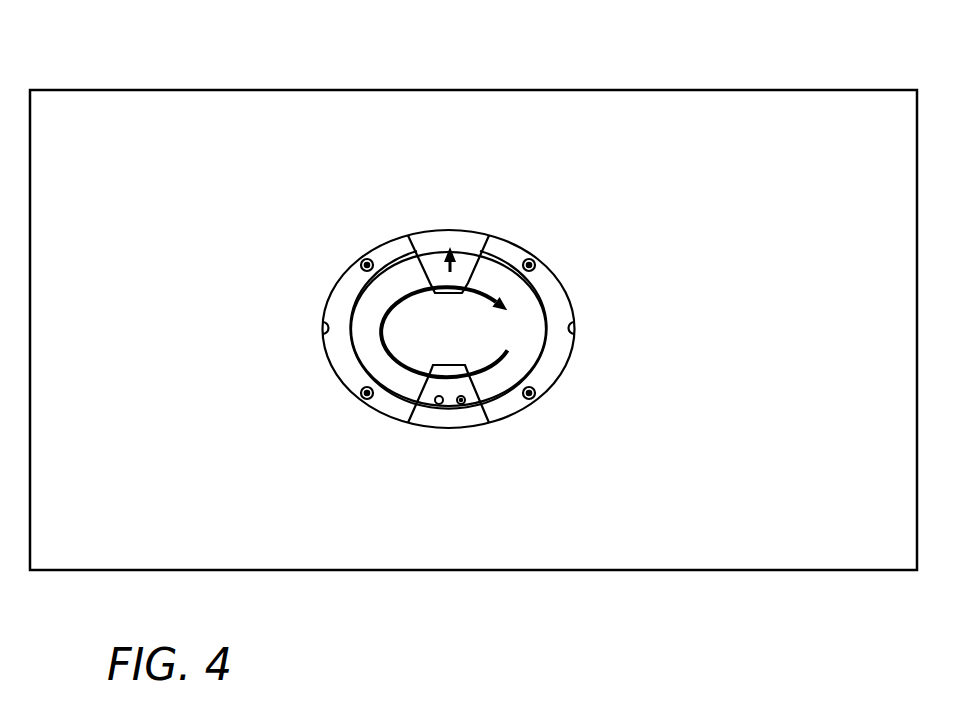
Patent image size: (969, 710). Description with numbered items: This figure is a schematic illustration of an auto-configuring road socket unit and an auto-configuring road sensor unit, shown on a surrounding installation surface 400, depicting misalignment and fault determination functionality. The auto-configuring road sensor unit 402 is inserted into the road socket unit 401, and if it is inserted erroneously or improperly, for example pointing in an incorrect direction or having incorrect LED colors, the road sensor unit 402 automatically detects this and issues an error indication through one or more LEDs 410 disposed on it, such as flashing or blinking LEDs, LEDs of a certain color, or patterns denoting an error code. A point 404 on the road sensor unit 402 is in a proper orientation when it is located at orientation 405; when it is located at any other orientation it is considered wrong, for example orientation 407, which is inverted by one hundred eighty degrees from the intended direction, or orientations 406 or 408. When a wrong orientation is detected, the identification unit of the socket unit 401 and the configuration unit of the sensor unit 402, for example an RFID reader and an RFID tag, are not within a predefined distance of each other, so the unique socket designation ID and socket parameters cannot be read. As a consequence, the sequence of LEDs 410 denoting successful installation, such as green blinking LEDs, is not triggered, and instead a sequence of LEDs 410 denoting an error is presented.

The mounting surface / panel 400 is at (872, 622).
The road socket unit 401 is at (552, 352).
The auto-configuring road sensor unit 402 is at (418, 313).
The point on road sensor unit 404 is at (455, 248).
The proper orientation 405 is at (444, 245).
The wrong orientation 406 is at (503, 248).
The inverted orientation 407 is at (450, 425).
The wrong orientation 408 is at (386, 252).
The LEDs 410 is at (442, 403).